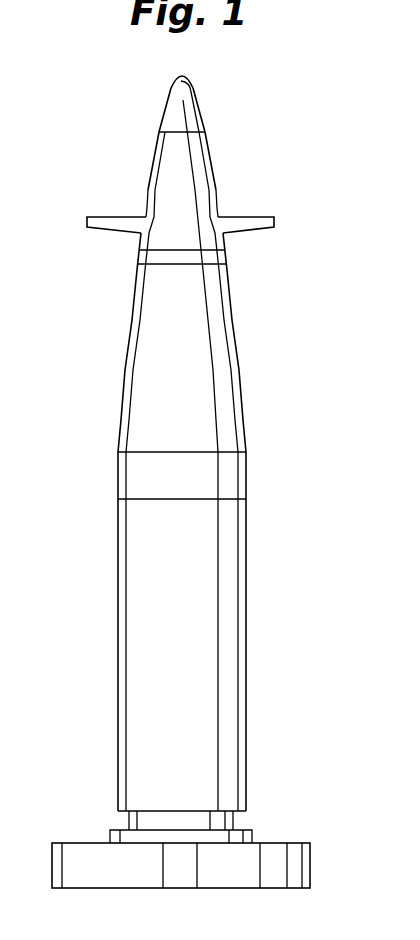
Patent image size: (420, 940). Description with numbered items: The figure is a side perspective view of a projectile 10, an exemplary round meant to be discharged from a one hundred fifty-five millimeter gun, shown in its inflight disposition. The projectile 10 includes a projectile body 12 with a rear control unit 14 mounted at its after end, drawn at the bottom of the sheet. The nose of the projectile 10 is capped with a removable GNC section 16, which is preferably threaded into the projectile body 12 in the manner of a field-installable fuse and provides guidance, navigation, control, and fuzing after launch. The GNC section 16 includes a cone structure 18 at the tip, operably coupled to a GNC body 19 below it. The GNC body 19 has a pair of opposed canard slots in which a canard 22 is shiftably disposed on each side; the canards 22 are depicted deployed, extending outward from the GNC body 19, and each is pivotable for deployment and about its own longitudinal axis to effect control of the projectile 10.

The projectile 10 is at (292, 358).
The projectile body 12 is at (245, 528).
The rear control unit 14 is at (252, 832).
The GNC section 16 is at (222, 137).
The cone structure 18 is at (170, 107).
The GNC body 19 is at (215, 185).
The canard 22 is at (113, 217).